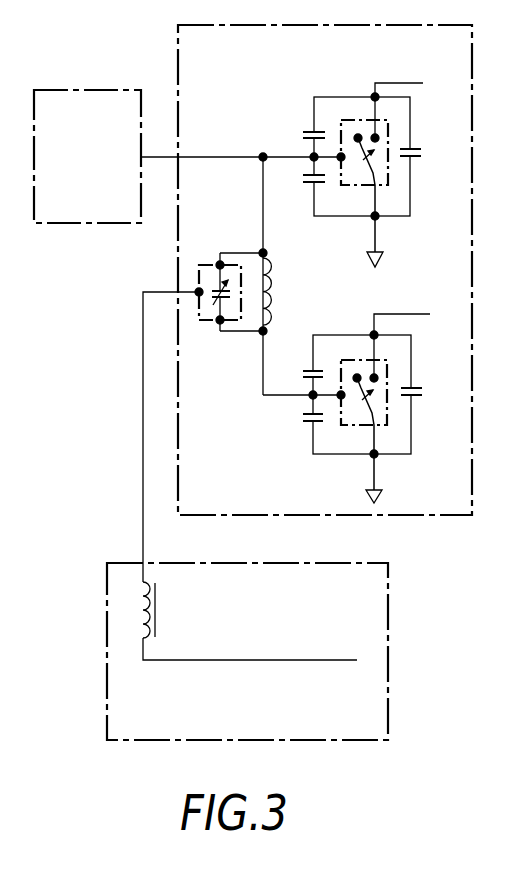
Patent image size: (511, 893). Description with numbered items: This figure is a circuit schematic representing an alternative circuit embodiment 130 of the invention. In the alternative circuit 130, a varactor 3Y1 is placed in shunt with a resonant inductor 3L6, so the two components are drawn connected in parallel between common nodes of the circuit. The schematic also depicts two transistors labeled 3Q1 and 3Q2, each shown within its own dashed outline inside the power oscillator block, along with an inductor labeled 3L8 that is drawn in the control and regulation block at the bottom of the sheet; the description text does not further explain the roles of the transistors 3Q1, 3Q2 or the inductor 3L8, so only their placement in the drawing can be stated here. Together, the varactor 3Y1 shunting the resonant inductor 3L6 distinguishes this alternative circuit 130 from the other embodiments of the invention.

The alternative circuit embodiment 130 is at (96, 388).
The transistor 3Q1 is at (370, 175).
The transistor 3Q2 is at (370, 408).
The varactor 3Y1 is at (226, 300).
The resonant inductor 3L6 is at (283, 291).
The RF choke inductor 3L8 is at (166, 610).